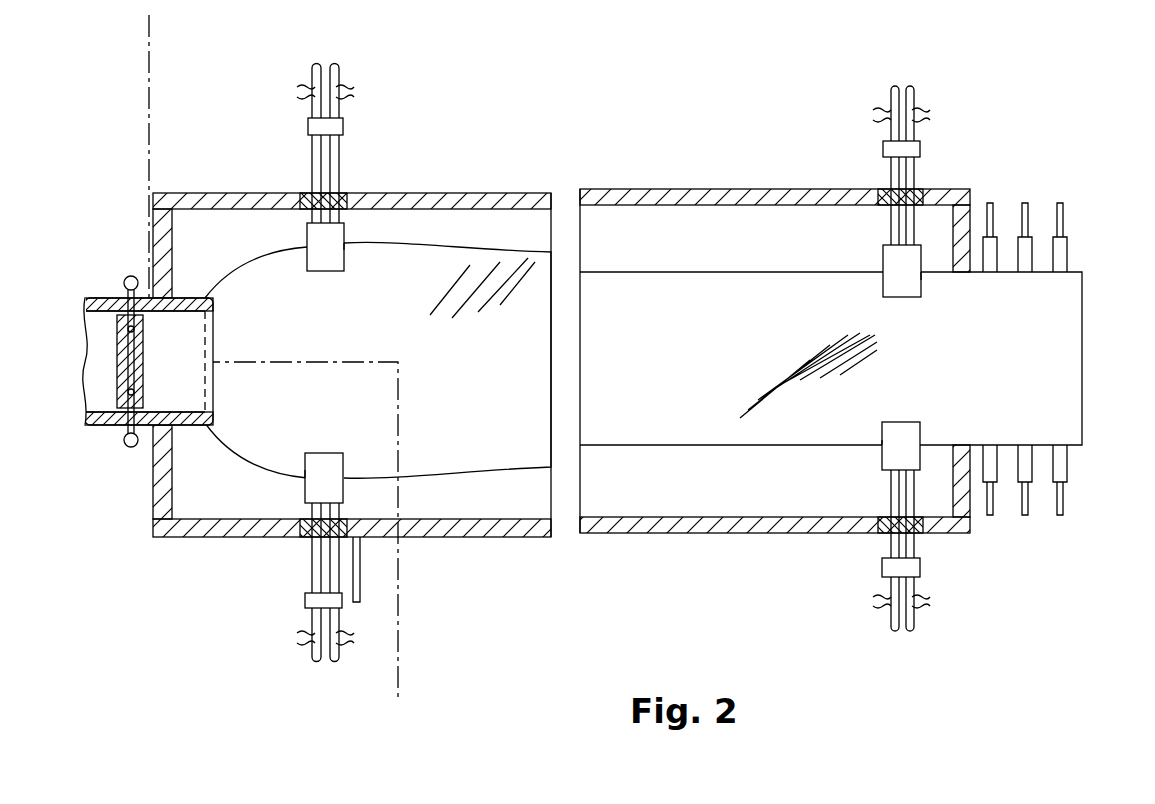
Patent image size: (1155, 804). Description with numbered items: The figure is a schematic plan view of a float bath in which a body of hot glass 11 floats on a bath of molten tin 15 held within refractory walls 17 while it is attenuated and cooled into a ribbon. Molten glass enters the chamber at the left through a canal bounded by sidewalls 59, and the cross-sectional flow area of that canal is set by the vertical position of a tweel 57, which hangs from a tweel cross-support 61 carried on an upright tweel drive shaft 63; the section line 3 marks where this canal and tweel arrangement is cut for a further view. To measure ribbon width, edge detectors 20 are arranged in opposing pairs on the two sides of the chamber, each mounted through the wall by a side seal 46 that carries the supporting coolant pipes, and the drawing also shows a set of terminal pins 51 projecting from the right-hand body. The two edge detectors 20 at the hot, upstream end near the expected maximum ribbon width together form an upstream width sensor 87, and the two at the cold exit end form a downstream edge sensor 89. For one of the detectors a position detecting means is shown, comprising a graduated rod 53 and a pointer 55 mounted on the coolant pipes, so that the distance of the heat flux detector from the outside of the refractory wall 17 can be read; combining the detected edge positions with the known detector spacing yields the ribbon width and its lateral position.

The section line 3 is at (122, 37).
The body of hot glass 11 is at (460, 365).
The bath of molten metal 15 is at (524, 242).
The refractory wall 17 is at (640, 190).
The edge detector 20 is at (320, 265).
The side seal 46 is at (349, 182).
The terminal pins 51 is at (1025, 512).
The rod 53 is at (355, 568).
The pointer 55 is at (342, 603).
The tweel 57 is at (118, 333).
The canal sidewall 59 is at (103, 426).
The tweel cross-support 61 is at (125, 295).
The tweel drive shaft 63 is at (127, 447).
The upstream width sensor 87 is at (351, 258).
The downstream edge sensor 89 is at (934, 288).